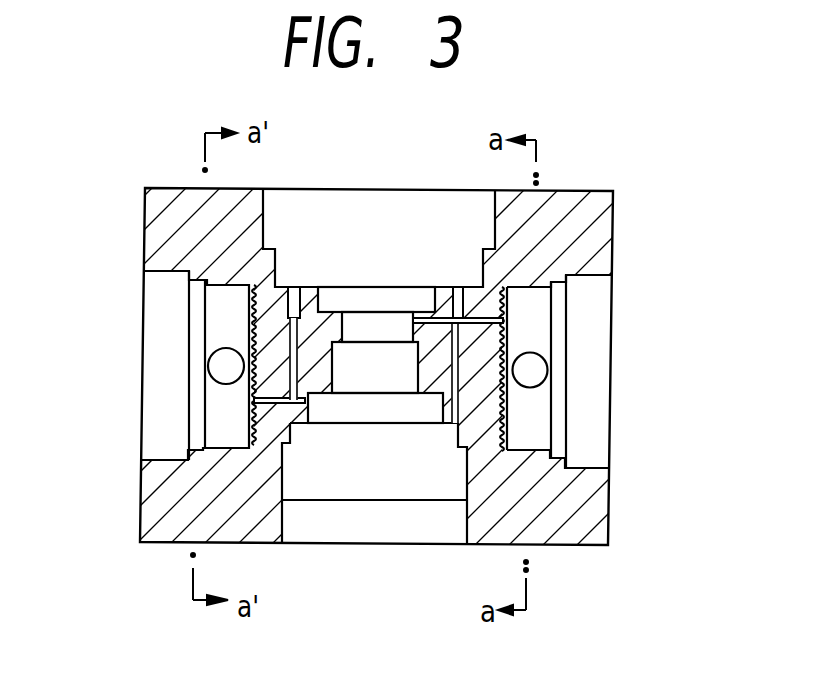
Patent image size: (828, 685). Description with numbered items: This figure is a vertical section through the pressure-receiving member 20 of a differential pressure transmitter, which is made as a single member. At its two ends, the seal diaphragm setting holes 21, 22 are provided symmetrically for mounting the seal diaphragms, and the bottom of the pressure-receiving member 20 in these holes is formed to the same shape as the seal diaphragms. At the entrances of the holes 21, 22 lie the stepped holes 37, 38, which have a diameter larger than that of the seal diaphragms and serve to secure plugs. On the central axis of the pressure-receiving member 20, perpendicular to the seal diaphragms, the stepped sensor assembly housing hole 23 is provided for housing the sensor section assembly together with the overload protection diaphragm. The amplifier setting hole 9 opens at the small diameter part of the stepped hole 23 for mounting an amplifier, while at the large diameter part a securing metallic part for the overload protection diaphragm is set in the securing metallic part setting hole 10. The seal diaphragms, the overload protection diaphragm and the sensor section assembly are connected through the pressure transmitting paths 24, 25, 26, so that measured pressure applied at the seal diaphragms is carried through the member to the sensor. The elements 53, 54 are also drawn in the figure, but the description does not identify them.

The amplifier setting hole 9 is at (325, 267).
The securing metallic part setting hole 10 is at (345, 483).
The pressure-receiving member 20 is at (188, 188).
The seal diaphragm setting hole 21 is at (222, 327).
The seal diaphragm setting hole 22 is at (543, 340).
The sensor assembly housing hole 23 is at (372, 358).
The pressure transmitting path 24 is at (262, 397).
The pressure transmitting path 25 is at (565, 191).
The pressure transmitting path 26 is at (458, 402).
The stepped hole 37 is at (170, 285).
The stepped hole 38 is at (593, 302).
The left pin 53 is at (293, 250).
The right pin 54 is at (457, 287).